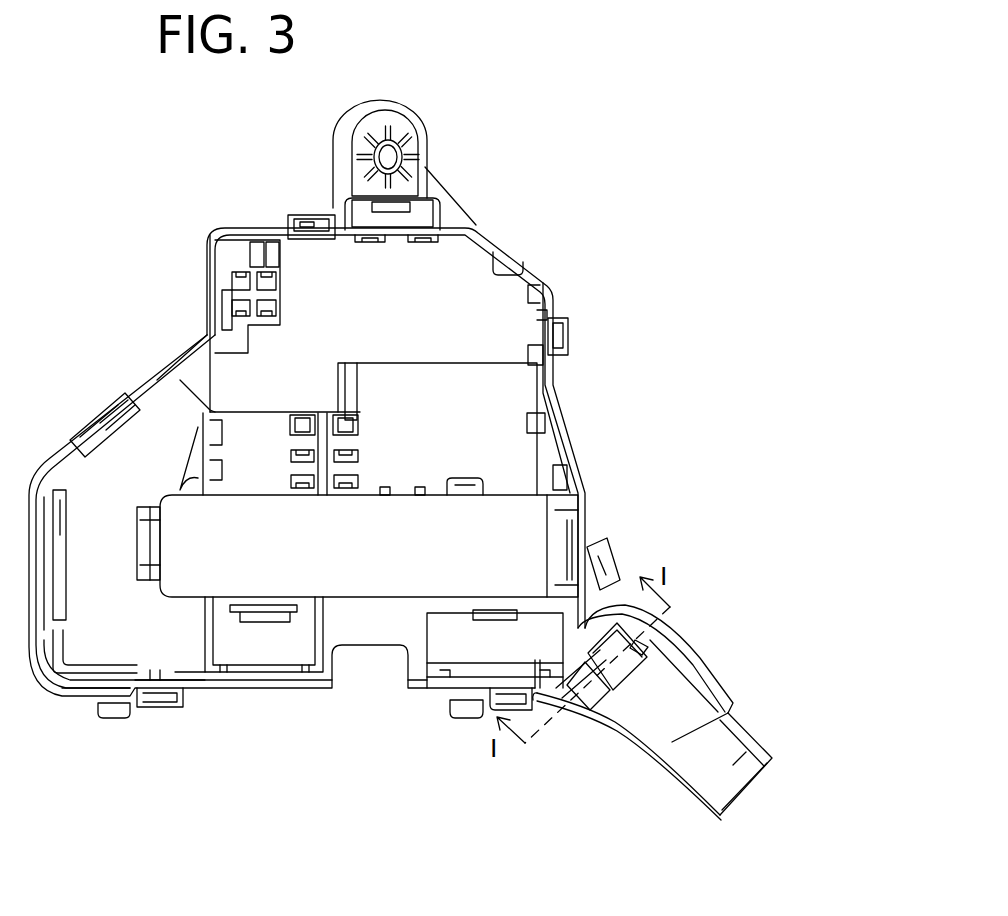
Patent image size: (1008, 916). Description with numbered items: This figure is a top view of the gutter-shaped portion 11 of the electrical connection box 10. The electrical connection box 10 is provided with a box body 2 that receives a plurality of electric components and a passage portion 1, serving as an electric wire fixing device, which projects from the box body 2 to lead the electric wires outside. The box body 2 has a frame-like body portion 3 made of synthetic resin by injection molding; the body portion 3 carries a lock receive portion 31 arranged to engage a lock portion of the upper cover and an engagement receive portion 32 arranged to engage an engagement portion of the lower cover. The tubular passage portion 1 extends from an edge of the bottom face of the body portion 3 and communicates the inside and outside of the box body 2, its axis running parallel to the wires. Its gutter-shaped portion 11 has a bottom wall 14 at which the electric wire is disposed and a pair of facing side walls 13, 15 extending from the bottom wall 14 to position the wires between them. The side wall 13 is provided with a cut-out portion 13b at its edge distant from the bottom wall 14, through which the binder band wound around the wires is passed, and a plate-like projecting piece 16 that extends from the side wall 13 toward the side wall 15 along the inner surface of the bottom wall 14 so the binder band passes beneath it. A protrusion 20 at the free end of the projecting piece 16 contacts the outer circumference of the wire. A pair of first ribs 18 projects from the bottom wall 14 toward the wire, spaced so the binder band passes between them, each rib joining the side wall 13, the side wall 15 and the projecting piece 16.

The passage portion 1 is at (707, 709).
The box body 2 is at (675, 413).
The body portion 3 is at (307, 398).
The electrical connection box 10 is at (823, 524).
The gutter-shaped portion 11 is at (738, 760).
The side wall 13 is at (673, 687).
The cut-out portion 13b is at (640, 637).
The bottom wall 14 is at (730, 793).
The side wall 15 is at (670, 777).
The projecting piece 16 is at (650, 660).
The first ribs 18 is at (560, 697).
The protrusion 20 is at (613, 667).
The lock receive portion 31 is at (112, 720).
The engagement receive portion 32 is at (305, 215).